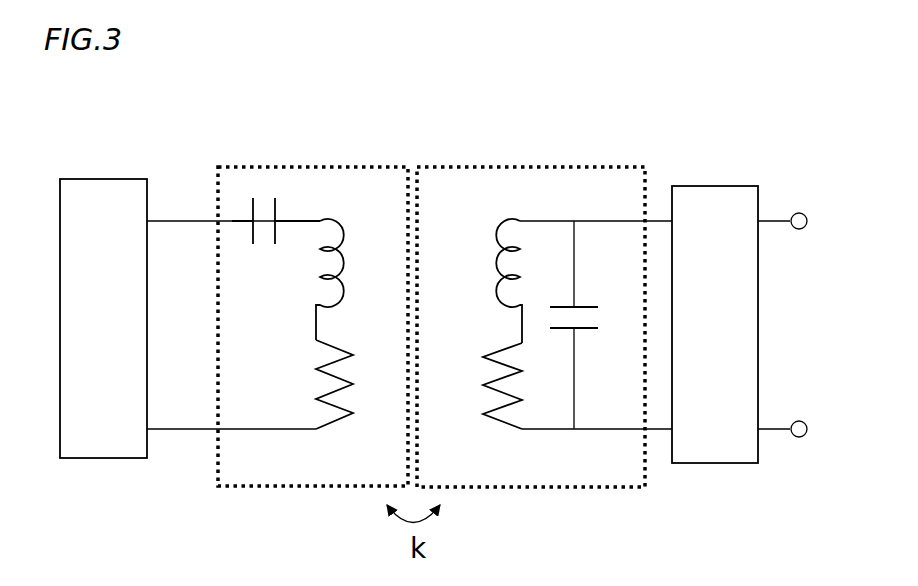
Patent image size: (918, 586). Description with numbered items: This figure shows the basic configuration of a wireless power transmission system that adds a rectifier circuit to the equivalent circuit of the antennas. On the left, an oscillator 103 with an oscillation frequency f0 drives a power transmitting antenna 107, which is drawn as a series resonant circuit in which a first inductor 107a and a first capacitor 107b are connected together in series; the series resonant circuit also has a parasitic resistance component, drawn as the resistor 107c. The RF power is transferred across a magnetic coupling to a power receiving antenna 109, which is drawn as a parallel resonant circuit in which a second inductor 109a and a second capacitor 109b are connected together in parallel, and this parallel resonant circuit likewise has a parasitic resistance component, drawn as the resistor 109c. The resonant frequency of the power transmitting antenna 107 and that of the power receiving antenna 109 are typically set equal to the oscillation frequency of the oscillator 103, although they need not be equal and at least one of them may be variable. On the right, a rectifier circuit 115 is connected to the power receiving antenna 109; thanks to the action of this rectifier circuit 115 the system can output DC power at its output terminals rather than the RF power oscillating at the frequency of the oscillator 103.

The oscillator 103 is at (98, 179).
The power transmitting antenna 107 is at (310, 167).
The first inductor 107a is at (350, 227).
The first capacitor 107b is at (255, 211).
The resistor R1 107c is at (343, 413).
The power receiving antenna 109 is at (514, 167).
The second inductor 109a is at (490, 228).
The second capacitor 109b is at (584, 302).
The resistor R2 109c is at (465, 427).
The rectifier circuit 115 is at (712, 186).